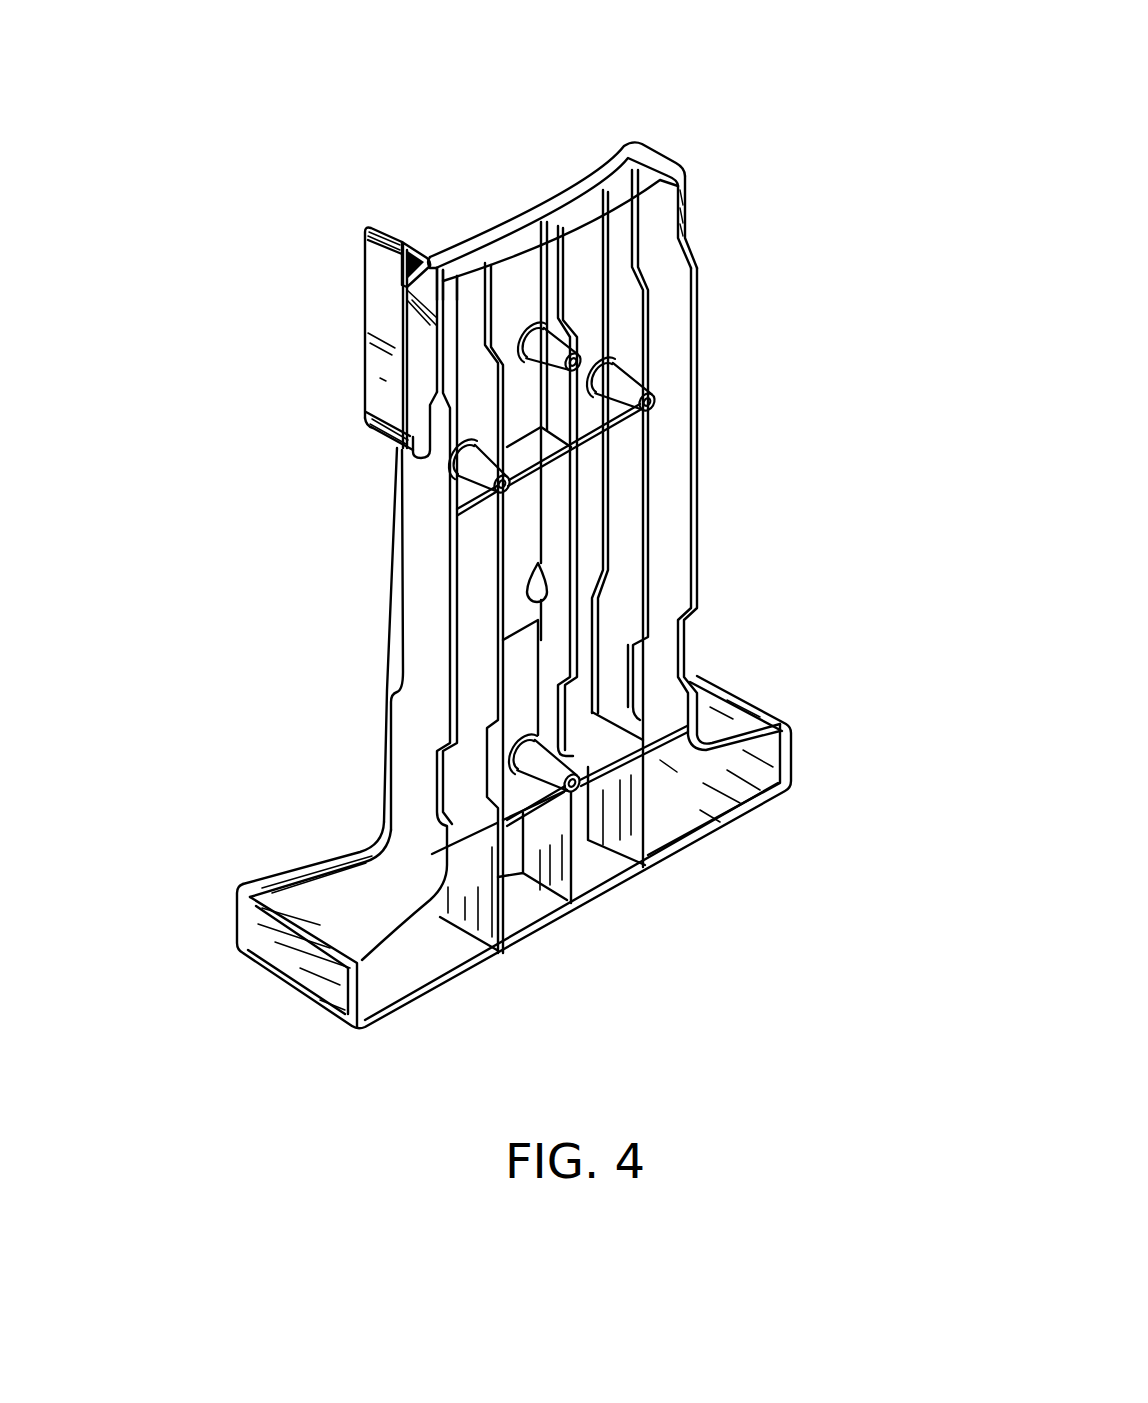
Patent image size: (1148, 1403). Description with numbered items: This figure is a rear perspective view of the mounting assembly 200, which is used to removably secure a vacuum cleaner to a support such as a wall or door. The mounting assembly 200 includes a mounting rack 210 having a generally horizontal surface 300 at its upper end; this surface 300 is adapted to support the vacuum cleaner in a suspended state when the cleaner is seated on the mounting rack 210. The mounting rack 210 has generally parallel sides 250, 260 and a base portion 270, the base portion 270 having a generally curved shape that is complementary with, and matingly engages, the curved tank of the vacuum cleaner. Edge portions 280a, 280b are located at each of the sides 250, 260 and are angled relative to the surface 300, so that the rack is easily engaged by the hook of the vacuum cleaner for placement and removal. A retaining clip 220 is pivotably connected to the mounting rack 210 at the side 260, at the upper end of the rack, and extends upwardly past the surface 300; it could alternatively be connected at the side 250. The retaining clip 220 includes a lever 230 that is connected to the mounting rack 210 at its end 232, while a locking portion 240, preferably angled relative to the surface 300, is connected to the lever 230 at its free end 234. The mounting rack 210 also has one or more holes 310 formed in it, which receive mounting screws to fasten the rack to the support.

The mounting assembly 200 is at (848, 115).
The mounting rack 210 is at (588, 518).
The retaining clip 220 is at (352, 249).
The lever 230 is at (365, 368).
The end of the lever 232 is at (365, 416).
The free end of the lever 234 is at (365, 317).
The locking portion 240 is at (405, 237).
The side 250 is at (699, 550).
The side 260 is at (386, 628).
The base portion 270 is at (303, 868).
The edge portion 280a is at (440, 266).
The edge portion 280b is at (677, 163).
The surface 300 is at (623, 170).
The holes 310 is at (582, 355).